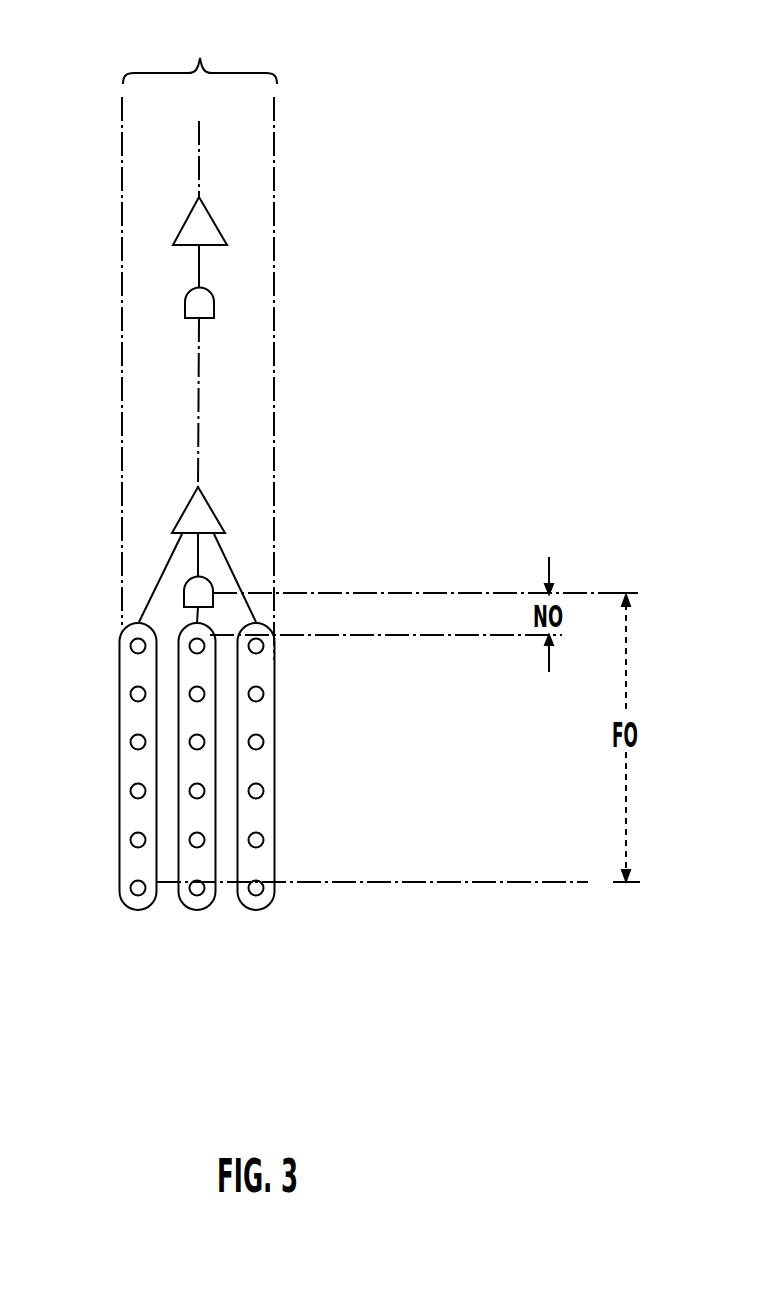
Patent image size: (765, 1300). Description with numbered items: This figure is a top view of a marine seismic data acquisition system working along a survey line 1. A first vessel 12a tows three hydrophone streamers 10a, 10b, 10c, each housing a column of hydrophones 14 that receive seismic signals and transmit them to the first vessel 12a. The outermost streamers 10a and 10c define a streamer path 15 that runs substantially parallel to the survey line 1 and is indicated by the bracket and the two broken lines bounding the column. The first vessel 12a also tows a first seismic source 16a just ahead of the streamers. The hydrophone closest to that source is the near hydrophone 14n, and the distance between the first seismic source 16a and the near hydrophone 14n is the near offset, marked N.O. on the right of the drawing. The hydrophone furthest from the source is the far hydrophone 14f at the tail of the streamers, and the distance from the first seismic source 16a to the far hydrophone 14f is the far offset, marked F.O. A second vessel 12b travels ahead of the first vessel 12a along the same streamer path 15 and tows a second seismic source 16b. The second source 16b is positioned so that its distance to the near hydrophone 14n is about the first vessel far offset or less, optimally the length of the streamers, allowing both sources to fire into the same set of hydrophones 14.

The survey line 1 is at (200, 392).
The streamer path 15 is at (200, 57).
The first vessel 12a is at (217, 507).
The second vessel 12b is at (188, 220).
The first seismic source 16a is at (213, 586).
The second seismic source 16b is at (186, 300).
The outermost streamer 10a is at (120, 760).
The streamer 10b is at (120, 818).
The outermost streamer 10c is at (275, 733).
The hydrophones 14 is at (131, 650).
The near hydrophone 14n is at (203, 650).
The far hydrophone 14f is at (203, 893).